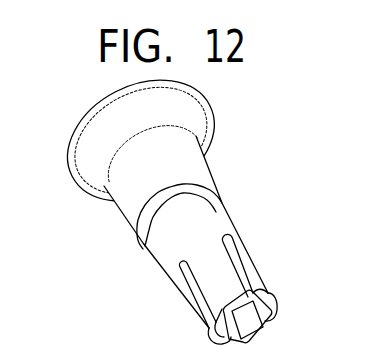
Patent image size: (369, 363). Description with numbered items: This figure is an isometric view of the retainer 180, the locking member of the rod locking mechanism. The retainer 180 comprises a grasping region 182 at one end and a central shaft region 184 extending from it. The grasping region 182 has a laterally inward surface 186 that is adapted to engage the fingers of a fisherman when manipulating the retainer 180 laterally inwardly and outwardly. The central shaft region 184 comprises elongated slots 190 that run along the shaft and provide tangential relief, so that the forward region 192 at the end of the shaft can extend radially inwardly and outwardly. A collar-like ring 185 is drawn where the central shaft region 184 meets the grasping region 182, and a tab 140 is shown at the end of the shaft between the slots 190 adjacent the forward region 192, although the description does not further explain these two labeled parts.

The retainer 180 is at (92, 93).
The grasping region 182 is at (93, 160).
The central shaft region 184 is at (196, 248).
The collar 185 is at (146, 246).
The laterally inward surface 186 is at (188, 113).
The elongated slots 190 is at (245, 258).
The forward region 192 is at (232, 298).
The tab 140 is at (195, 305).